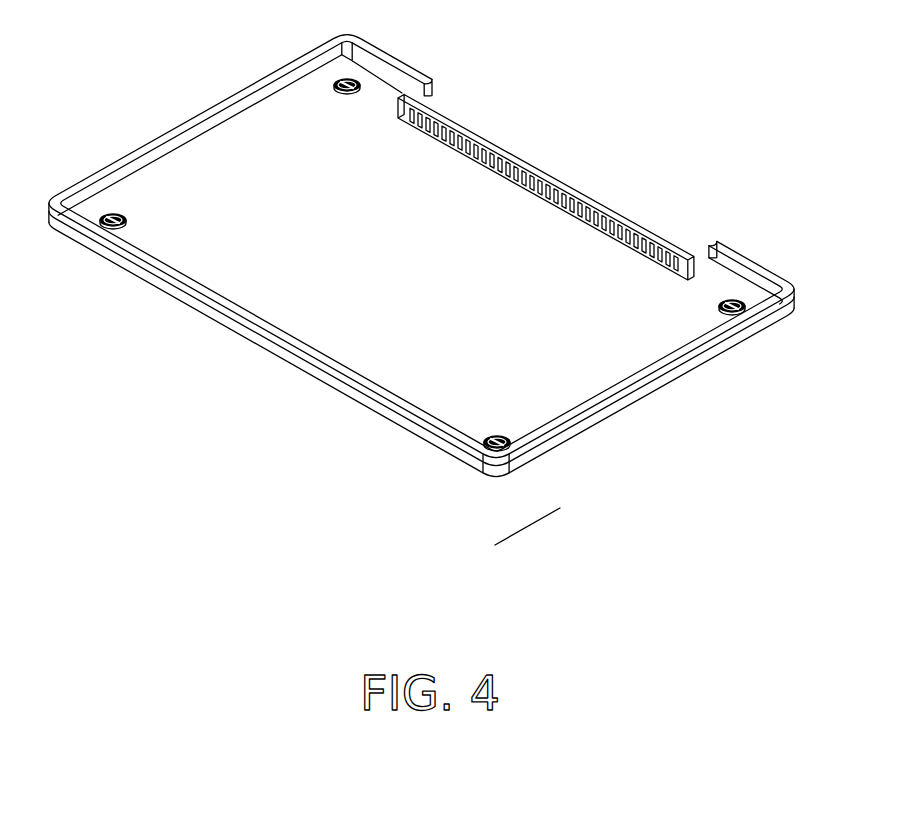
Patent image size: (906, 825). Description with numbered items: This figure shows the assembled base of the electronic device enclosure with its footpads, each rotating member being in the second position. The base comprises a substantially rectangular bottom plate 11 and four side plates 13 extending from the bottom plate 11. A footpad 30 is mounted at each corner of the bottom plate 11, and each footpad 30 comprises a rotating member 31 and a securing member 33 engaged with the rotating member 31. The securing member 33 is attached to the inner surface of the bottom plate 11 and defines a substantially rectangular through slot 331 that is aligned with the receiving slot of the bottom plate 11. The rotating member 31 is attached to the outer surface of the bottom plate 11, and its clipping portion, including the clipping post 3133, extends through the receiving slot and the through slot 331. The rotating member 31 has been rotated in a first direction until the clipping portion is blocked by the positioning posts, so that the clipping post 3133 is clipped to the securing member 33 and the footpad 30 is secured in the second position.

The side plate 13 is at (225, 120).
The bottom plate 11 is at (523, 217).
The footpad 30 is at (558, 505).
The rotating member 31 is at (500, 454).
The securing member 33 is at (510, 452).
The through slot 331 is at (729, 316).
The clipping post 3133 is at (468, 458).